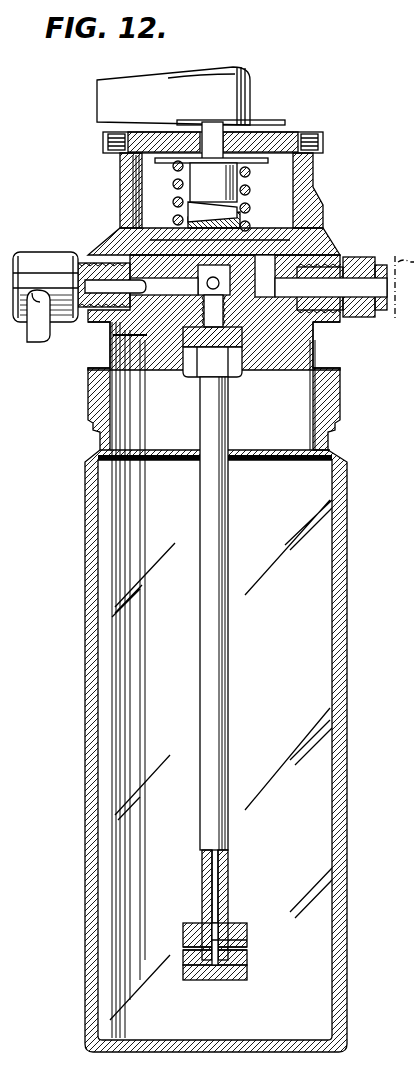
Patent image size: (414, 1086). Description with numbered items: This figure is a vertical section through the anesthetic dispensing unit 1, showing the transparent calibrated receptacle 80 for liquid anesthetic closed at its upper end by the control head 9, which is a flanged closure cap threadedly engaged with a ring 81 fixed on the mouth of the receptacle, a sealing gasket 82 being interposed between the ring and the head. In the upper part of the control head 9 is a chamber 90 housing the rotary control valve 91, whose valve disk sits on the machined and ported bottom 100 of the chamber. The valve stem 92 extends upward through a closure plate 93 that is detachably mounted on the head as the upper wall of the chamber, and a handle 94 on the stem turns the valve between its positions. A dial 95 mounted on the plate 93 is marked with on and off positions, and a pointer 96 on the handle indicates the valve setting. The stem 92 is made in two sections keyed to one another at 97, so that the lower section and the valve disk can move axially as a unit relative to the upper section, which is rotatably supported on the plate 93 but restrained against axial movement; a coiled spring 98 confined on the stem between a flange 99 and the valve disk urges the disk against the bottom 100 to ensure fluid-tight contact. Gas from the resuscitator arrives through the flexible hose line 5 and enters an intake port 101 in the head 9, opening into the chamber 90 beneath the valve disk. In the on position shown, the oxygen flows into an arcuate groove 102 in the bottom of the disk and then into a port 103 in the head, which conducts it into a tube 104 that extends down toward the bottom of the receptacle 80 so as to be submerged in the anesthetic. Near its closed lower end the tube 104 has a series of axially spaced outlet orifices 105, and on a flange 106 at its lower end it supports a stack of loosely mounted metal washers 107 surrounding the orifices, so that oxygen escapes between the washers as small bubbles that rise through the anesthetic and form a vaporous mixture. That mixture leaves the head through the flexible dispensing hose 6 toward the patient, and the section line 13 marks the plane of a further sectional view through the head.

The dispensing unit 1 is at (315, 90).
The flexible hose line 5 is at (28, 330).
The flexible dispensing hose 6 is at (398, 262).
The control head 9 is at (258, 142).
The section line 13— 13 is at (83, 222).
The receptacle 80 is at (345, 790).
The ring 81 is at (93, 403).
The sealing gasket 82 is at (340, 365).
The chamber 90 is at (147, 172).
The rotary control valve 91 is at (232, 70).
The valve stem 92 is at (180, 192).
The closure plate 93 is at (150, 142).
The handle 94 is at (143, 84).
The dial 95 is at (163, 140).
The pointer 96 is at (283, 123).
The key 97 is at (186, 210).
The coiled spring 98 is at (222, 181).
The flange 99 is at (187, 140).
The bottom of the chamber 100 is at (245, 250).
The intake port 101 is at (145, 292).
The arcuate groove 102 is at (79, 287).
The port 103 is at (232, 288).
The tube 104 is at (218, 656).
The outlet orifices 105 is at (215, 945).
The flange 106 is at (237, 981).
The metal washers 107 is at (183, 947).